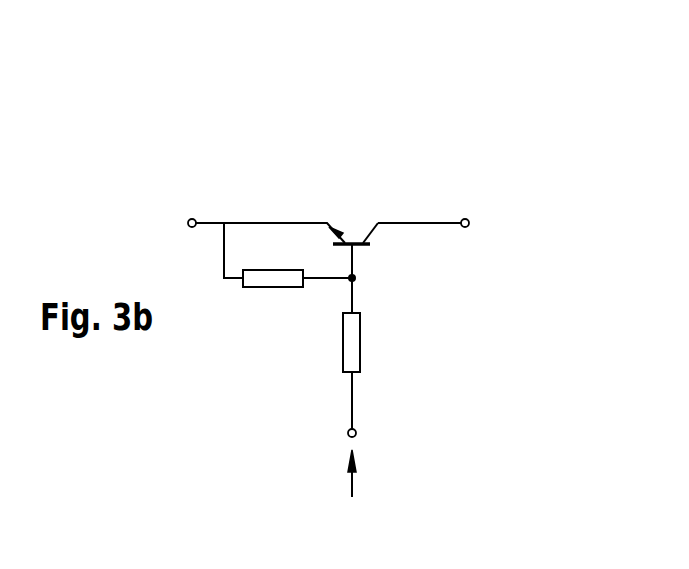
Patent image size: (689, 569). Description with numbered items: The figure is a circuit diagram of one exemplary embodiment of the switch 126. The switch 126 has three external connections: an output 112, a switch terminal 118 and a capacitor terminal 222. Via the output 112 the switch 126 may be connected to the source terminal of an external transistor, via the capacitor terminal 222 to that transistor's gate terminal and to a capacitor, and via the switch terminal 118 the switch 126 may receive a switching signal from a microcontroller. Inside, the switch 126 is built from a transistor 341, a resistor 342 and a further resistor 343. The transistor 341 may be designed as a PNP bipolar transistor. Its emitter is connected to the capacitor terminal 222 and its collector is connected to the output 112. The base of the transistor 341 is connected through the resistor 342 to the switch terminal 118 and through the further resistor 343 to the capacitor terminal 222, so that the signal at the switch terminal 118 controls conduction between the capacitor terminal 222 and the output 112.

The switch 126 is at (448, 108).
The capacitor terminal 222 is at (192, 212).
The output 112 is at (465, 212).
The transistor 341 is at (367, 236).
The further resistor 343 is at (273, 278).
The resistor 342 is at (353, 343).
The switch terminal 118 is at (357, 434).